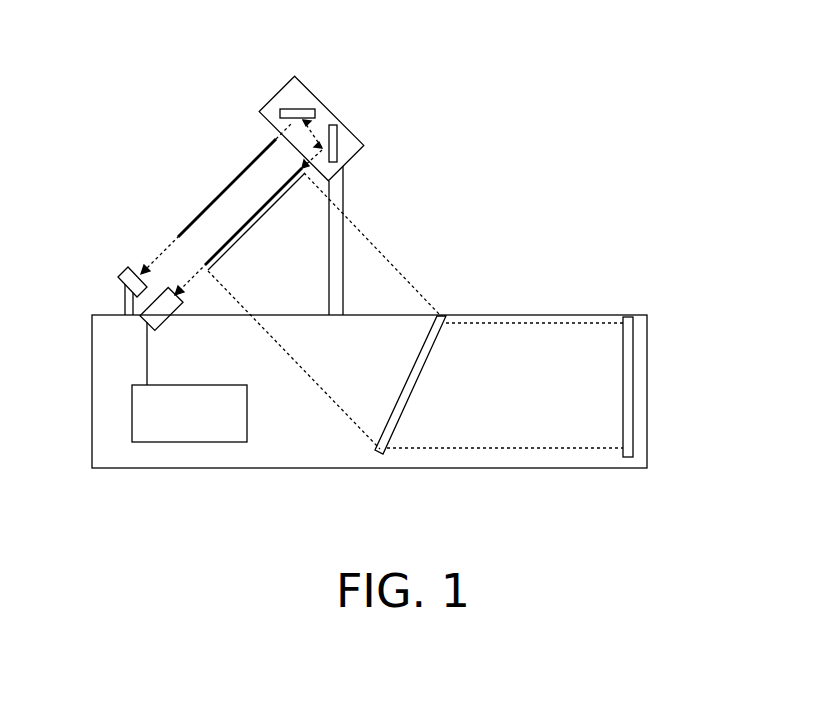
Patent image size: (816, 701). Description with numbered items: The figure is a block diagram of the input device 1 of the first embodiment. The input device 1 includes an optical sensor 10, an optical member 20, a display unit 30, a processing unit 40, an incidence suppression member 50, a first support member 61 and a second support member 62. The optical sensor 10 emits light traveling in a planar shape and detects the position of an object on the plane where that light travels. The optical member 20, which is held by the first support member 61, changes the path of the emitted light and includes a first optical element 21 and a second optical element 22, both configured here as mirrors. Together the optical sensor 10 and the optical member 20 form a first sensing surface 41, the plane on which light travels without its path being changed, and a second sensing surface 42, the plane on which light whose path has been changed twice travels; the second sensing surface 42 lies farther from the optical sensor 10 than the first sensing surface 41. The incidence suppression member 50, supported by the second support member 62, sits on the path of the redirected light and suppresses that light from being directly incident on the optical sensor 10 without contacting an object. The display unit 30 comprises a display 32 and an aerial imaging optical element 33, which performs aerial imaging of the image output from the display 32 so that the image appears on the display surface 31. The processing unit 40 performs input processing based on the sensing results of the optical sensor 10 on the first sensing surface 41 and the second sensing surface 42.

The input device 1 is at (508, 76).
The optical sensor 10 is at (165, 323).
The optical member 20 is at (301, 98).
The first optical element 21 is at (342, 107).
The second optical element 22 is at (288, 108).
The display unit 30 is at (539, 347).
The display surface 31 is at (232, 250).
The display 32 is at (657, 367).
The aerial imaging optical element 33 is at (447, 315).
The processing unit 40 is at (198, 382).
The first sensing surface 41 is at (210, 262).
The second sensing surface 42 is at (183, 233).
The incidence suppression member 50 is at (120, 272).
The first support member 61 is at (356, 132).
The second support member 62 is at (124, 297).